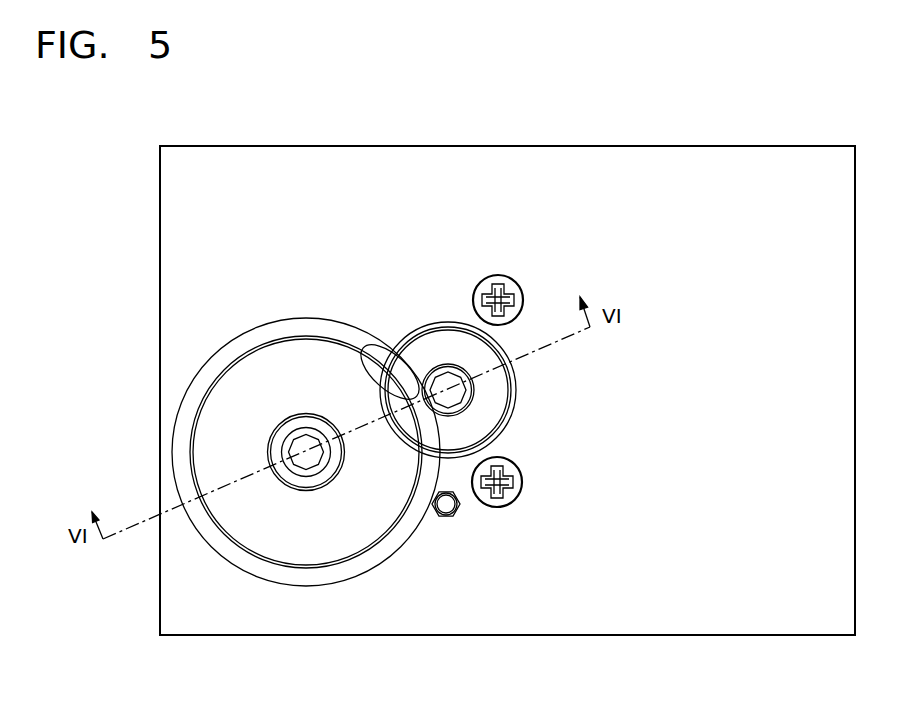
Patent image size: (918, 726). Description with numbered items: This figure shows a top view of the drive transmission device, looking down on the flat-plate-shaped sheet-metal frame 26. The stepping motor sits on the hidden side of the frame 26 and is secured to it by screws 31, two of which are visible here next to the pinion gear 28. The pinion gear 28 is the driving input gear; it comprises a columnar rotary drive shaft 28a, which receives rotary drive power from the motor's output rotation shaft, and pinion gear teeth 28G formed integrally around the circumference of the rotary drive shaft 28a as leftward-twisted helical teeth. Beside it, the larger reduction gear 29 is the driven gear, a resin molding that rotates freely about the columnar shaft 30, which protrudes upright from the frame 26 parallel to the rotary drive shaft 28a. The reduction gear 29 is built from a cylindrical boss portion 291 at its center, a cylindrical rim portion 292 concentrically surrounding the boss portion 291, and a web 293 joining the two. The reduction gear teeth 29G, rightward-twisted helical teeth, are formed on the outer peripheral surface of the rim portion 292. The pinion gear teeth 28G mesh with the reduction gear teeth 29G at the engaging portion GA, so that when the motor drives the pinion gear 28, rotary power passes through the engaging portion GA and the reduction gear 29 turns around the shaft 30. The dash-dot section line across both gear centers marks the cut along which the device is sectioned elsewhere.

The frame 26 is at (718, 166).
The pinion gear 28 is at (491, 345).
The pinion gear teeth 28G is at (453, 362).
The rotary drive shaft 28a is at (452, 395).
The reduction gear 29 is at (306, 463).
The reduction gear teeth 29G is at (423, 528).
The shaft 30 is at (307, 440).
The screws 31 is at (495, 277).
The engaging portion GA is at (360, 352).
The boss portion 291 is at (310, 482).
The rim portion 292 is at (223, 550).
The web 293 is at (372, 518).